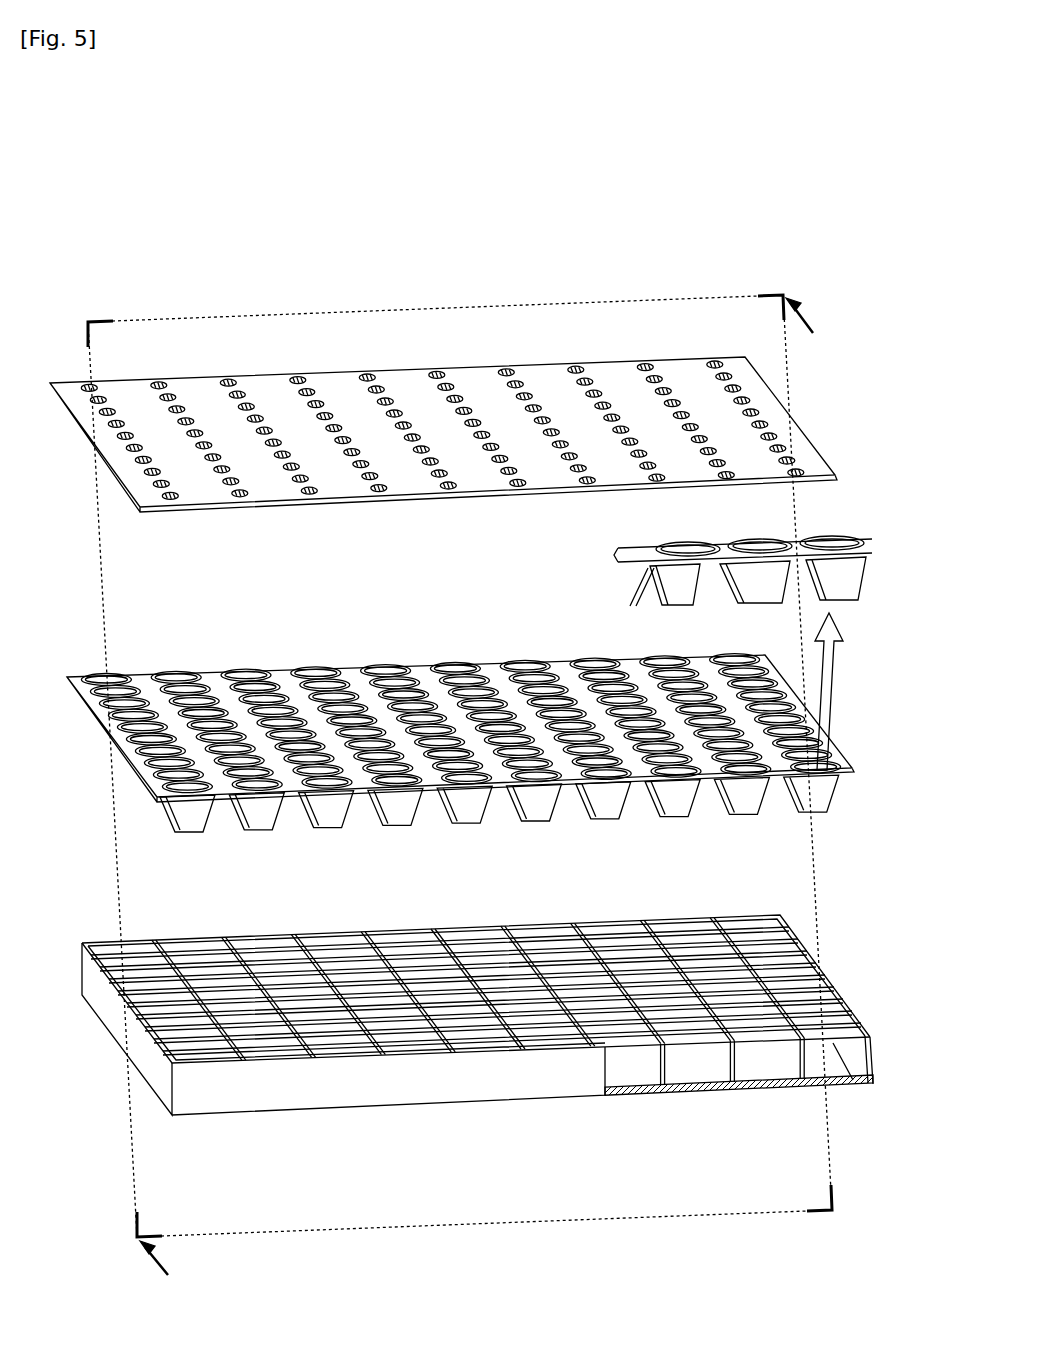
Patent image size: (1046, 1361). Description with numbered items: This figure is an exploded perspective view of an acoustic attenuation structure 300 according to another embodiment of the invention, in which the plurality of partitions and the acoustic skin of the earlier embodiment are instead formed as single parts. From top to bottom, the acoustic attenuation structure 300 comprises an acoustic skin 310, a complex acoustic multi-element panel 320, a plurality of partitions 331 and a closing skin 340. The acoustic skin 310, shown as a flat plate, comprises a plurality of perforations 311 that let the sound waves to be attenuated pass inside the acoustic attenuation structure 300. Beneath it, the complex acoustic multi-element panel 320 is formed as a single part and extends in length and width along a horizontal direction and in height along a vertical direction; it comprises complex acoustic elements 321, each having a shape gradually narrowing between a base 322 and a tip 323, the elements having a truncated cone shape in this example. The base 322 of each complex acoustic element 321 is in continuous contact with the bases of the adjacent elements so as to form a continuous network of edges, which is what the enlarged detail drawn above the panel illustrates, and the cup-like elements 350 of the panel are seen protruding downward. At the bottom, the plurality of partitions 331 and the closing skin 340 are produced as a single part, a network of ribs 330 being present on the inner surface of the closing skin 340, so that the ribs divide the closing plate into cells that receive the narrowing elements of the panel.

The acoustic attenuation structure 300 is at (683, 185).
The acoustic skin 310 is at (784, 441).
The perforations 311 is at (228, 383).
The complex acoustic multi-element panel 320 is at (278, 672).
The complex acoustic element 321 is at (782, 604).
The base 322 is at (862, 560).
The tip 323 is at (840, 601).
The network of ribs 330 is at (478, 932).
The partitions 331 is at (862, 1066).
The closing skin 340 is at (640, 1103).
The seedling cups 350 is at (525, 665).